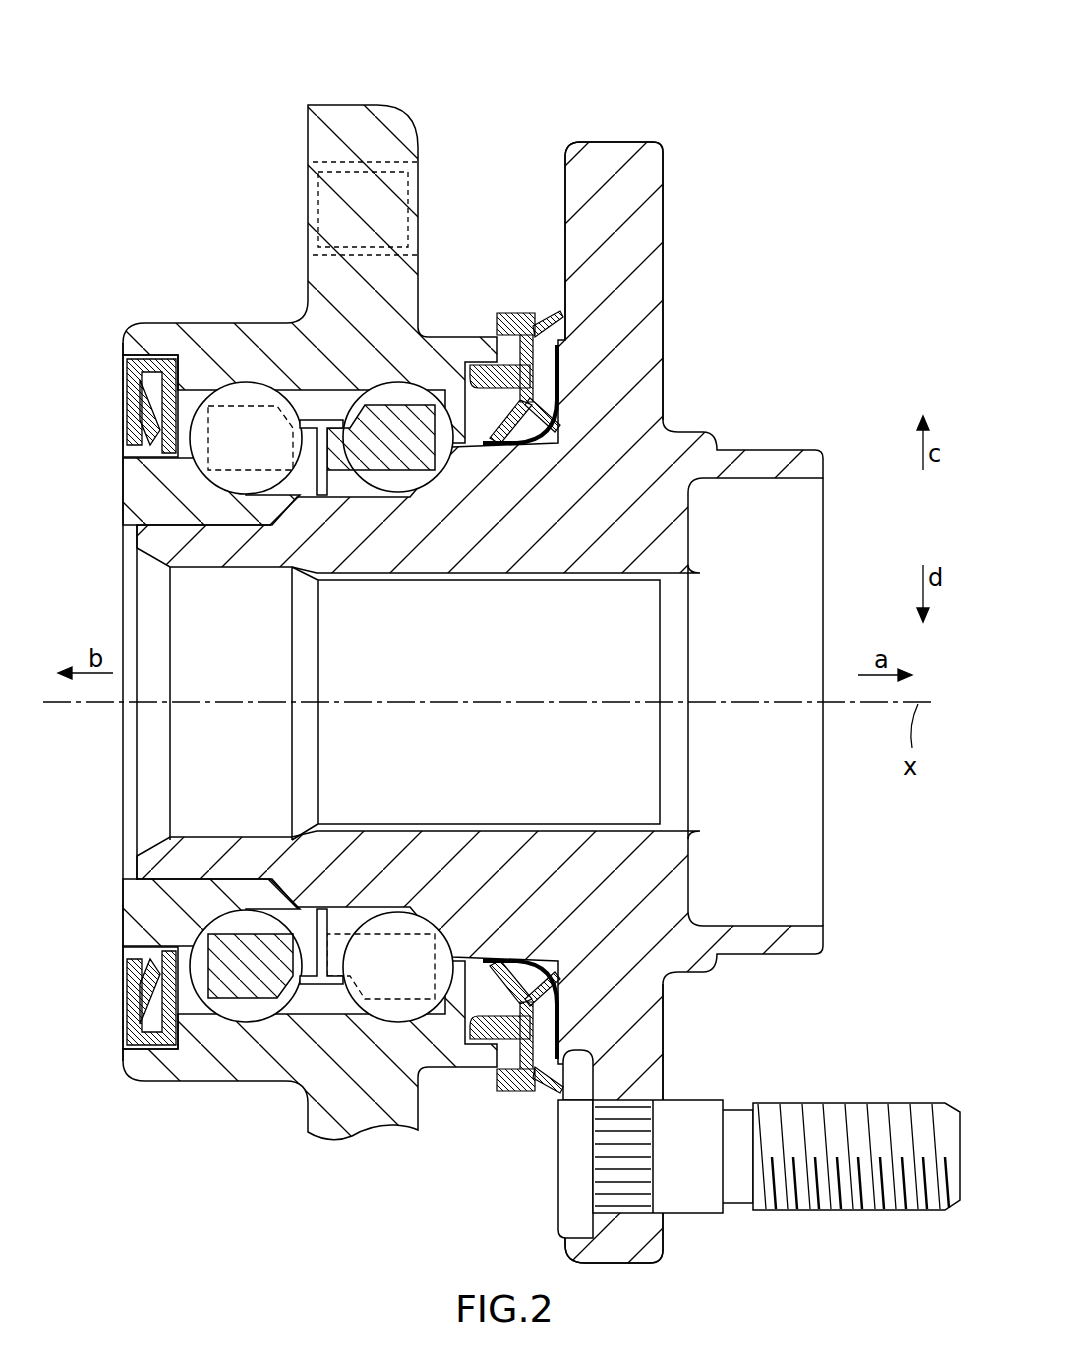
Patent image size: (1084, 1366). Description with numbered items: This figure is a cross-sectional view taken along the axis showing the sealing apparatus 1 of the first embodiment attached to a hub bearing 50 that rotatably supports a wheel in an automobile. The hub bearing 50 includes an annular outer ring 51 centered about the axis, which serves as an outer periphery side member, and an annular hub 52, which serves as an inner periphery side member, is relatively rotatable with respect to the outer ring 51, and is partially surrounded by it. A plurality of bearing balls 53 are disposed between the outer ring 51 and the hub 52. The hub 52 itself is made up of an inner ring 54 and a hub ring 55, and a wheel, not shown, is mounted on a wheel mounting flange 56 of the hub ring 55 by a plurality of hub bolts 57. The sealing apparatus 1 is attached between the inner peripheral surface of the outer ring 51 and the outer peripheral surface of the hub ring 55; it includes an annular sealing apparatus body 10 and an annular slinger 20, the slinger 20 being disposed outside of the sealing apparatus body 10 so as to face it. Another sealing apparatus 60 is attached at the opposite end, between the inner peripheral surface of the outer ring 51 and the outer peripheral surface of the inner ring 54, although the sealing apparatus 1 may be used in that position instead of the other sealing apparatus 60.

The sealing apparatus 1 is at (538, 274).
The sealing apparatus body 10 is at (504, 309).
The slinger 20 is at (547, 421).
The hub bearing 50 is at (548, 92).
The outer ring 51 is at (238, 345).
The hub 52 is at (704, 296).
The bearing balls 53 is at (441, 400).
The inner ring 54 is at (136, 494).
The hub ring 55 is at (670, 452).
The wheel mounting flange 56 is at (645, 1040).
The hub bolts 57 is at (829, 1206).
The other sealing apparatus 60 is at (103, 383).